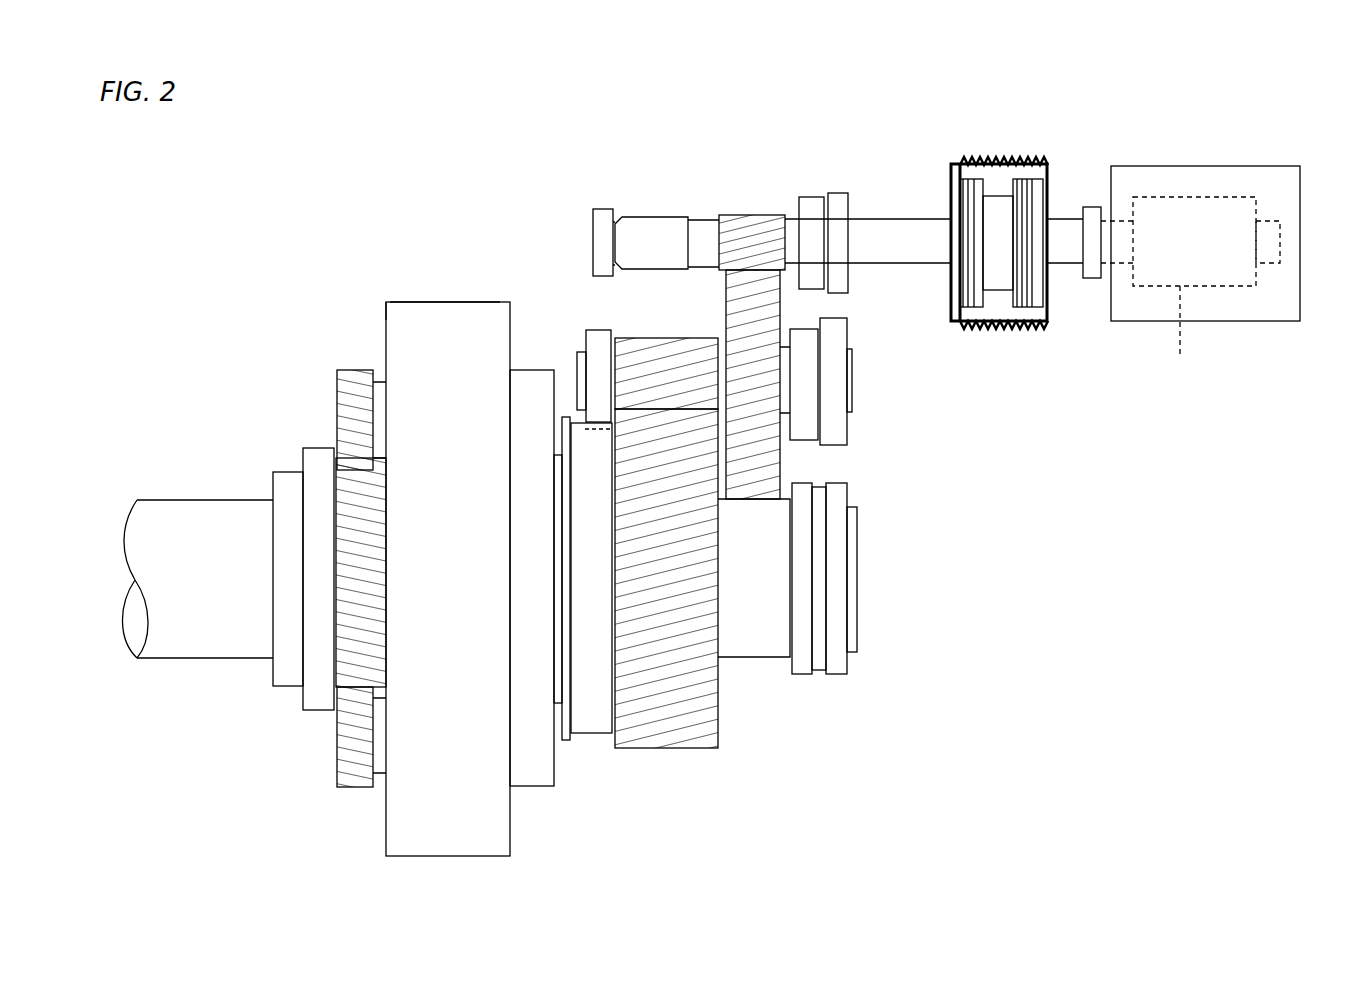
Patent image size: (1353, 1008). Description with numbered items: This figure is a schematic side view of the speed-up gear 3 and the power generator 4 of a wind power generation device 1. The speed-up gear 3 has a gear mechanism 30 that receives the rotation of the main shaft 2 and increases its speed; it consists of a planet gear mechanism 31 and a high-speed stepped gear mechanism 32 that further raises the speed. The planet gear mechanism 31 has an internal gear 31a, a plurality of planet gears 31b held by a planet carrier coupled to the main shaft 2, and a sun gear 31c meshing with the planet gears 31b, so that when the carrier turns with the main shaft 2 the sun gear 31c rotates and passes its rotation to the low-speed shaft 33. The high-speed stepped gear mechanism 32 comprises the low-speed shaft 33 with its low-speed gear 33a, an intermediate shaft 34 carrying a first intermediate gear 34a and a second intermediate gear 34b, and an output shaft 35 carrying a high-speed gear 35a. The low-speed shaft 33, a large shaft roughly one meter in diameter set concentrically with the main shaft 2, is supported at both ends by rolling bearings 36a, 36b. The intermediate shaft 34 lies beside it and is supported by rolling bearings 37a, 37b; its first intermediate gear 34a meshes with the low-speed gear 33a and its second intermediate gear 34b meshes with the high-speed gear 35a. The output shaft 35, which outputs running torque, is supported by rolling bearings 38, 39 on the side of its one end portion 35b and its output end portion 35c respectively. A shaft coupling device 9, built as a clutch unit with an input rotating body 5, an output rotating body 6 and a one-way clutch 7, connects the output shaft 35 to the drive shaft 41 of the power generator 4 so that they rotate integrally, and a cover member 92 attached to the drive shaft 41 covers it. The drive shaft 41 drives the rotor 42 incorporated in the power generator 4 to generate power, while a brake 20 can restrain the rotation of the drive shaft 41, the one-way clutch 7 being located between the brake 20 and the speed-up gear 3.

The wind power generation device 1 is at (1191, 233).
The main shaft 2 is at (162, 510).
The speed-up gear 3 is at (443, 250).
The power generator 4 is at (1238, 322).
The input rotating body 5 is at (962, 310).
The output rotating body 6 is at (1033, 309).
The one-way clutch 7 is at (996, 282).
The shaft coupling device 9 is at (987, 288).
The brake 20 is at (1086, 207).
The gear mechanism 30 is at (384, 300).
The planet gear mechanism 31 is at (420, 534).
The internal gear 31a is at (415, 310).
The planet gears 31b is at (345, 388).
The sun gear 31c is at (340, 520).
The high-speed stepped gear mechanism 32 is at (808, 298).
The low-speed shaft 33 is at (755, 662).
The low-speed gear 33a is at (665, 738).
The intermediate shaft 34 is at (564, 349).
The first intermediate gear 34a is at (660, 340).
The second intermediate gear 34b is at (772, 305).
The output shaft 35 is at (767, 184).
The high-speed gear 35a is at (758, 213).
The one end portion 35b is at (636, 217).
The other end portion 35c is at (882, 218).
The rolling bearing 36a is at (592, 723).
The rolling bearing 36b is at (832, 669).
The rolling bearing 37a is at (601, 331).
The rolling bearing 37b is at (838, 327).
The rolling bearing 38 is at (595, 208).
The rolling bearing 39 is at (838, 193).
The drive shaft 41 is at (1073, 264).
The rotor 42 is at (1194, 291).
The cover member 92 is at (972, 156).